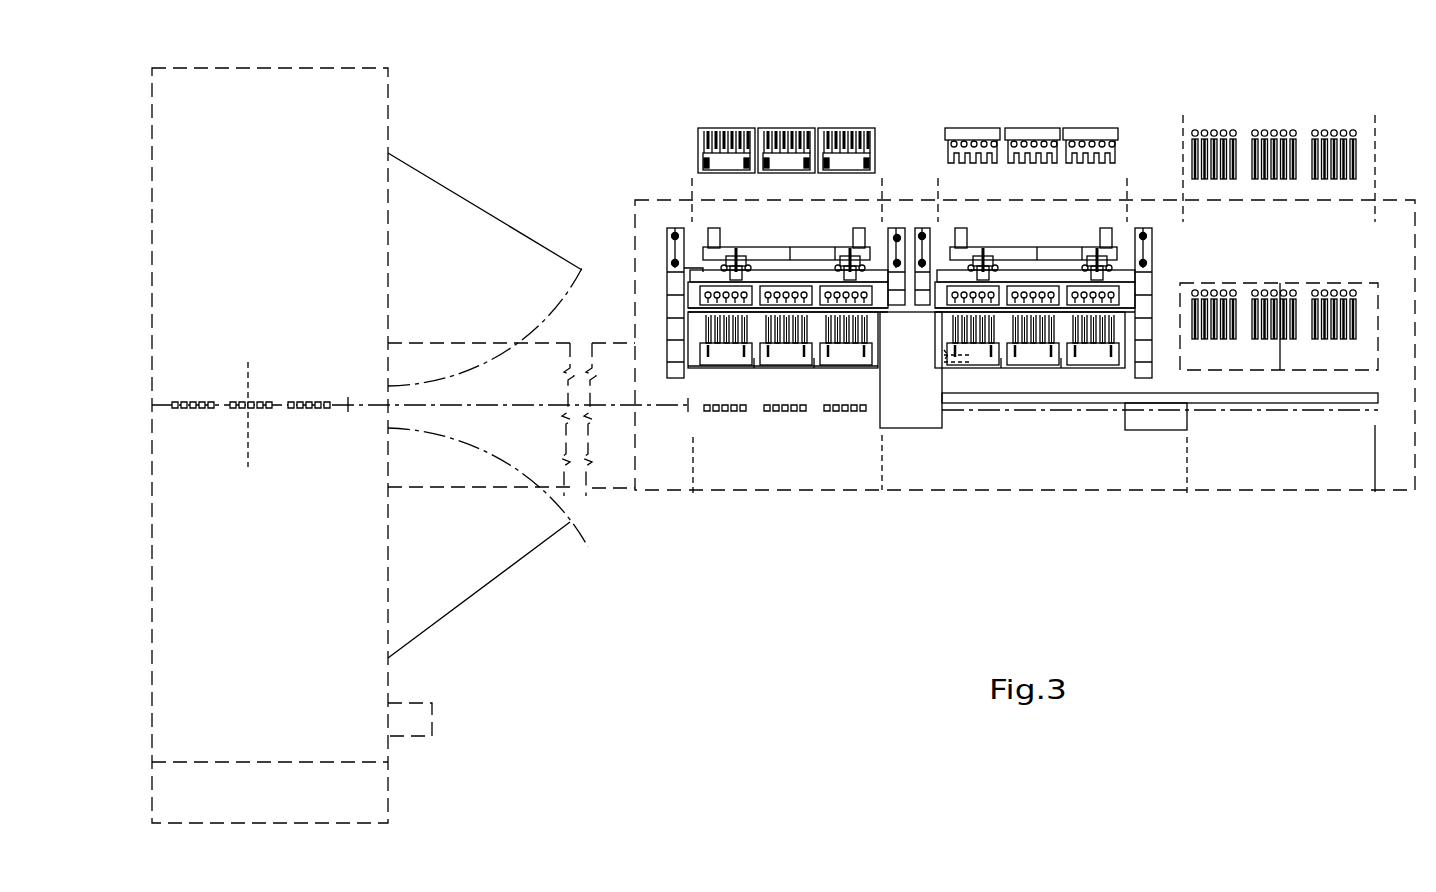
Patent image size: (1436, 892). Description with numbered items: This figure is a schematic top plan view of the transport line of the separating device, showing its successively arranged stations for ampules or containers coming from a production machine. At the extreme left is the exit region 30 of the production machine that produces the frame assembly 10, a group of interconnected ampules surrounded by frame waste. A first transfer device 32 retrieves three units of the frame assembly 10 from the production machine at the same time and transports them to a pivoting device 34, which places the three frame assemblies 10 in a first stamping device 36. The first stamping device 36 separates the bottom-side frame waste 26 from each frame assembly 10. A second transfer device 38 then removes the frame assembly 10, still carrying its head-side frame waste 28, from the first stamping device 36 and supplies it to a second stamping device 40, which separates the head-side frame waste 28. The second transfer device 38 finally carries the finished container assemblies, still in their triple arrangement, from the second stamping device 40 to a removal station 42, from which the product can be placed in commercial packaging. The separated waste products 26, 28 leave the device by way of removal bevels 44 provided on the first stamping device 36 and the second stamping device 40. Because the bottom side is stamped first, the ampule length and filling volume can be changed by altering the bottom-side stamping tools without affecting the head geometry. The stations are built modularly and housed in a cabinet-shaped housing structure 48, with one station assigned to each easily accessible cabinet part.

The frame assembly 10 is at (203, 410).
The bottom-side frame waste 26 is at (722, 140).
The head-side frame waste 28 is at (972, 130).
The exit region of the production machine 30 is at (466, 549).
The first transfer device 32 is at (263, 397).
The pivoting device 34 is at (856, 360).
The first stamping device 36 is at (740, 245).
The second transfer device 38 is at (913, 315).
The second stamping device 40 is at (1127, 312).
The removal station 42 is at (1290, 380).
The removal bevels 44 is at (809, 232).
The housing structure 48 is at (765, 488).